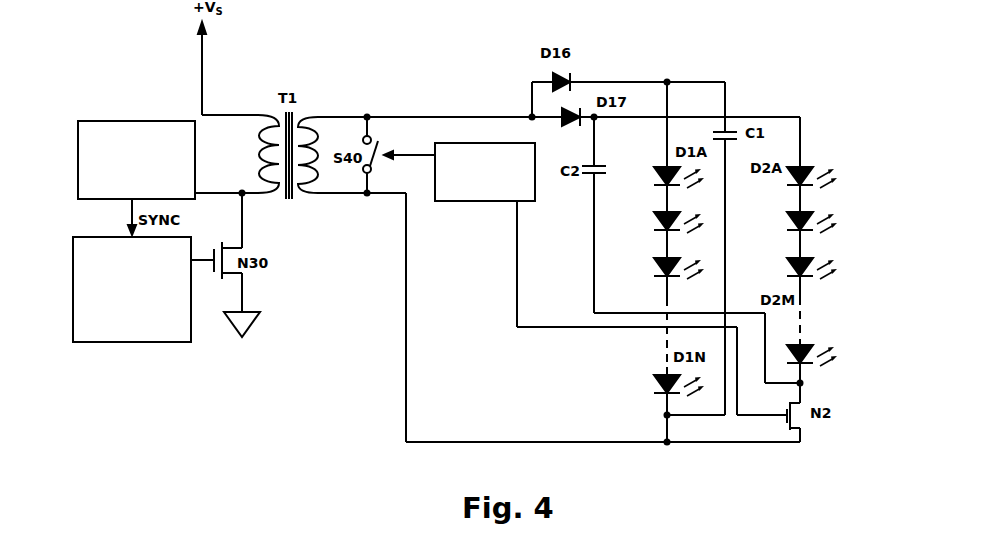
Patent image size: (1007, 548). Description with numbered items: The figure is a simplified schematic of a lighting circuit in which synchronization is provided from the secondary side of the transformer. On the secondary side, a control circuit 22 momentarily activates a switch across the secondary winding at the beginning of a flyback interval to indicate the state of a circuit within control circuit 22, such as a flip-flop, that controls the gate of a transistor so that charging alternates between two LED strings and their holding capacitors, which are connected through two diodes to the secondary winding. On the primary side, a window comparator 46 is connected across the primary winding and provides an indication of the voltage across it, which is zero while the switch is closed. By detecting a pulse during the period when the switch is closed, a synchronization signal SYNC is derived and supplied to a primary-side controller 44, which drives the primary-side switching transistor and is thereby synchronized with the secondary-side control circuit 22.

The window comparator 46 is at (136, 160).
The primary-side controller 44 is at (132, 289).
The control circuit 22 is at (485, 172).